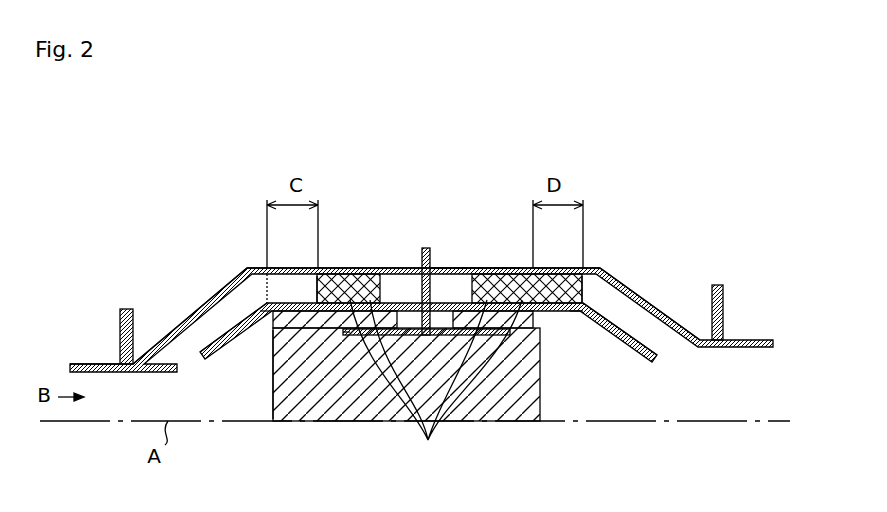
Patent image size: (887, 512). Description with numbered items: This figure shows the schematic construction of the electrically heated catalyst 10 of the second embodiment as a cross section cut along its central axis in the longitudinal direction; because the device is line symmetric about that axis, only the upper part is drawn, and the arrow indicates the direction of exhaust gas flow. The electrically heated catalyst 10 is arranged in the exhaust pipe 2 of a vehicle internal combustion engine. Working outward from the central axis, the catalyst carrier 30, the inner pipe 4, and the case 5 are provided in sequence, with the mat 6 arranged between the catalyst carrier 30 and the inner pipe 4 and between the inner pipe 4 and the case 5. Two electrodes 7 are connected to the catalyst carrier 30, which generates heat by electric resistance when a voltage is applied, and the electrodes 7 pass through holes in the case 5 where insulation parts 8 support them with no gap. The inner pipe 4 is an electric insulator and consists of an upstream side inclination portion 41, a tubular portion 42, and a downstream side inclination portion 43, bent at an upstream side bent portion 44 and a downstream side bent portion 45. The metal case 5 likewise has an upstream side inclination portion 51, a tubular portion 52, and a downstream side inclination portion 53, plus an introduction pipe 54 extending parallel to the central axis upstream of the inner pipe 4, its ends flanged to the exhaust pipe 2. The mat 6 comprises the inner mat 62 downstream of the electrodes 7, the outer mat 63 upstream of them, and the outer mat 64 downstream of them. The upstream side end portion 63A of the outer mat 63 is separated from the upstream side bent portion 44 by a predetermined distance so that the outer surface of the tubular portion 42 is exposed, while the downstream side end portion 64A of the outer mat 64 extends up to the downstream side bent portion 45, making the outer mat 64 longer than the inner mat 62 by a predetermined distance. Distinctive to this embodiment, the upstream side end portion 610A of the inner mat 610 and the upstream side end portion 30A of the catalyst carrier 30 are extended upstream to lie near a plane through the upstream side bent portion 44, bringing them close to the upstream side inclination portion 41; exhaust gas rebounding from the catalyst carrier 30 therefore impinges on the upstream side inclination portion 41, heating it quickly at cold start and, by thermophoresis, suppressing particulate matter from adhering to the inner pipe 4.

The exhaust pipe 2 is at (94, 364).
The inner pipe 4 is at (220, 353).
The case 5 is at (238, 280).
The mat 6 is at (436, 383).
The electrodes 7 is at (427, 248).
The insulation parts 8 is at (445, 268).
The electrically heated catalyst 10 is at (135, 240).
The catalyst carrier 30 is at (360, 407).
The upstream side end portion of the catalyst carrier 30A is at (272, 390).
The upstream side inclination portion 41 is at (246, 330).
The tubular portion 42 is at (308, 326).
The downstream side inclination portion 43 is at (625, 340).
The upstream side bent portion 44 is at (252, 312).
The downstream side bent portion 45 is at (584, 315).
The upstream side inclination portion 51 is at (202, 310).
The tubular portion 52 is at (266, 267).
The downstream side inclination portion 53 is at (661, 311).
The introduction pipe 54 is at (157, 373).
The inner mat 62 is at (490, 268).
The outer mat 63 is at (354, 268).
The upstream side end portion of the outer mat 63A is at (334, 268).
The outer mat 64 is at (523, 280).
The downstream side end portion of the outer mat 64A is at (585, 292).
The inner mat 610 is at (384, 329).
The upstream side end portion of the inner mat 610A is at (262, 322).